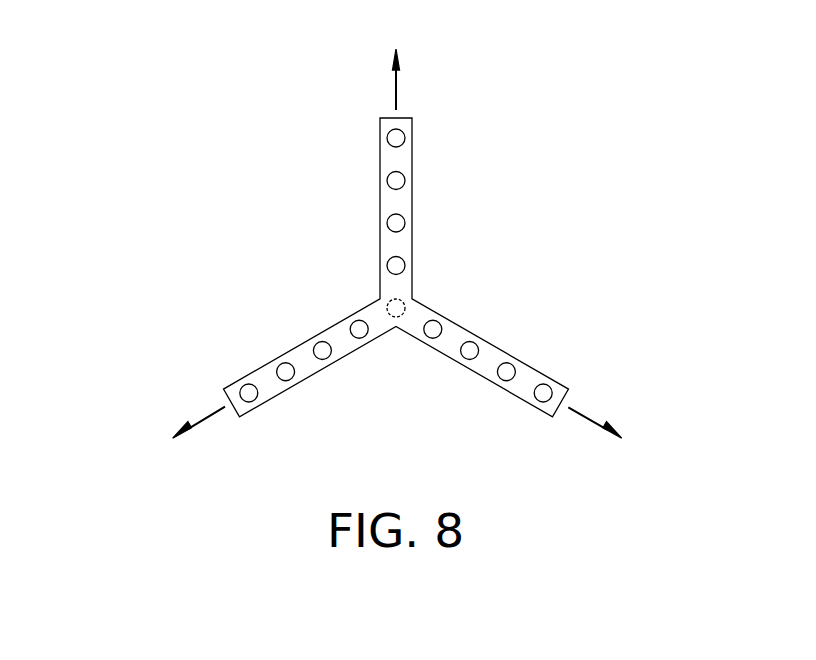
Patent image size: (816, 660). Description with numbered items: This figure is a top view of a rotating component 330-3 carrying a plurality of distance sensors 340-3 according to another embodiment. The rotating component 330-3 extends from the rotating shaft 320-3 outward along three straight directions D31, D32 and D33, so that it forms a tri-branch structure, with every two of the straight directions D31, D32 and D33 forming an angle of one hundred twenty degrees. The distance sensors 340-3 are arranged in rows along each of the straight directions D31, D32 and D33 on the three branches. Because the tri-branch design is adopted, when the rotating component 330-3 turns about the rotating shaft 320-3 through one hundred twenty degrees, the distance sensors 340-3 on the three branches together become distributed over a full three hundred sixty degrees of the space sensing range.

The rotating component 330-3 is at (408, 118).
The distance sensors 340-3 is at (405, 180).
The rotating shaft 320-3 is at (407, 309).
The straight direction D31 is at (392, 80).
The straight direction D32 is at (598, 420).
The straight direction D33 is at (185, 413).